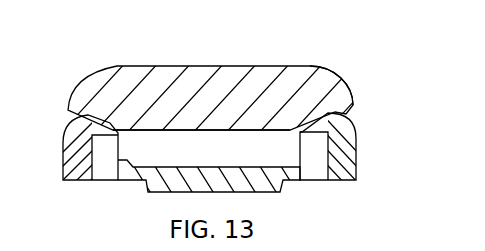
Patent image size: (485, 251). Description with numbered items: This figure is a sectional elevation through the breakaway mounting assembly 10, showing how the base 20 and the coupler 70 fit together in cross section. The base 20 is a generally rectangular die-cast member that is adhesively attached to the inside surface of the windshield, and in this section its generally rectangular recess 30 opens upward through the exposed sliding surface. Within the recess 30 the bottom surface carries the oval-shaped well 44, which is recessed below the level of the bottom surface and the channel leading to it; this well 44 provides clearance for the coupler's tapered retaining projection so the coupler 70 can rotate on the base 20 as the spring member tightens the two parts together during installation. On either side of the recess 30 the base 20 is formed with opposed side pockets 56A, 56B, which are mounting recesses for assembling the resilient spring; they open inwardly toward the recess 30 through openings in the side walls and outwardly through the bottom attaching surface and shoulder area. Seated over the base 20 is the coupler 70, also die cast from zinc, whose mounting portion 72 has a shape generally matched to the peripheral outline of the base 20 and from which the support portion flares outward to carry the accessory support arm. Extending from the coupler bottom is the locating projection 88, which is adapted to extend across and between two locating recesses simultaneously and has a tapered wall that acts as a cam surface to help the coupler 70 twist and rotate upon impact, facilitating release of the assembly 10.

The breakaway mounting assembly 10 is at (405, 137).
The base 20 is at (60, 148).
The recess 30 is at (290, 156).
The well 44 is at (210, 166).
The side pocket 56A is at (97, 166).
The side pocket 56B is at (326, 174).
The coupler 70 is at (192, 57).
The mounting portion 72 is at (337, 92).
The locating projection 88 is at (180, 120).